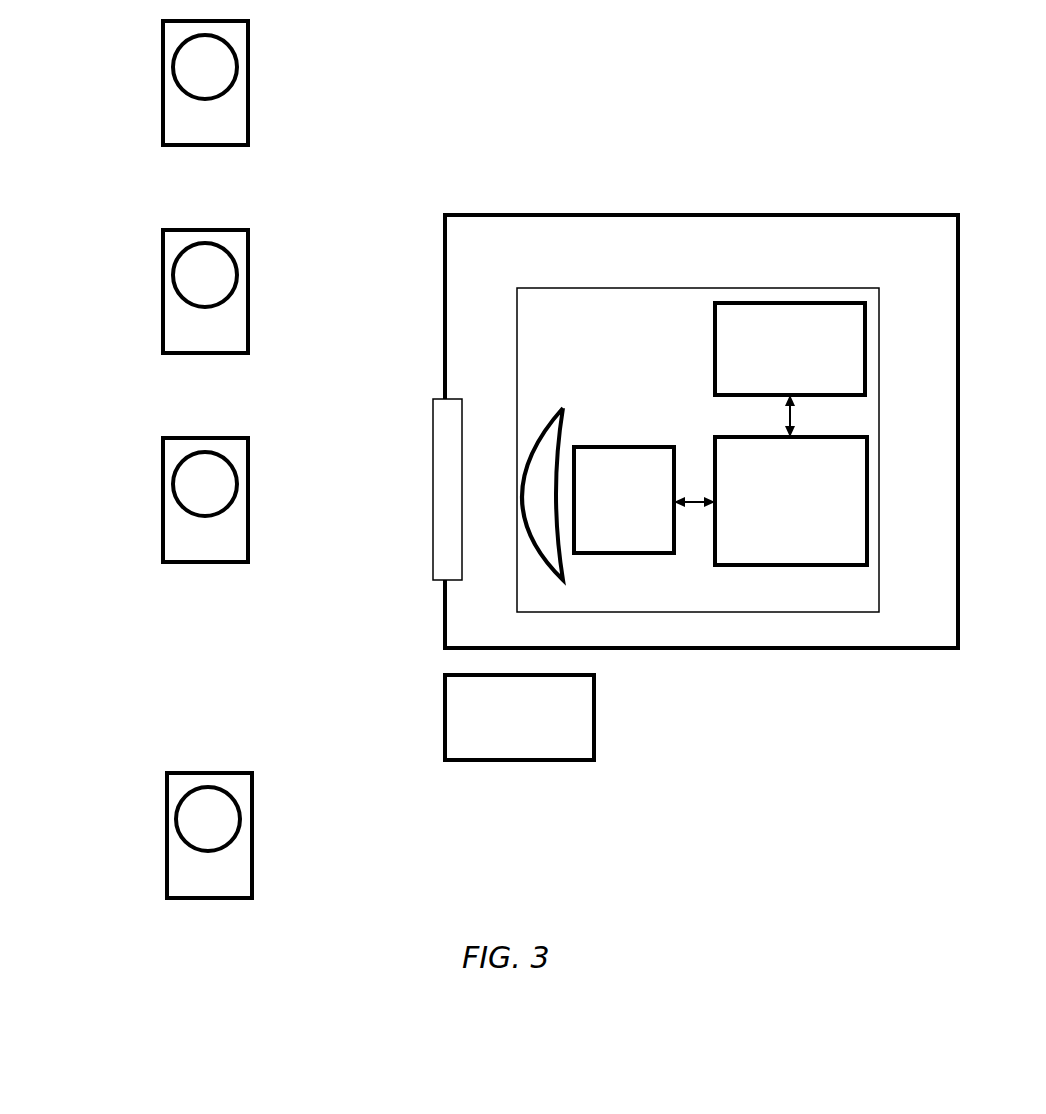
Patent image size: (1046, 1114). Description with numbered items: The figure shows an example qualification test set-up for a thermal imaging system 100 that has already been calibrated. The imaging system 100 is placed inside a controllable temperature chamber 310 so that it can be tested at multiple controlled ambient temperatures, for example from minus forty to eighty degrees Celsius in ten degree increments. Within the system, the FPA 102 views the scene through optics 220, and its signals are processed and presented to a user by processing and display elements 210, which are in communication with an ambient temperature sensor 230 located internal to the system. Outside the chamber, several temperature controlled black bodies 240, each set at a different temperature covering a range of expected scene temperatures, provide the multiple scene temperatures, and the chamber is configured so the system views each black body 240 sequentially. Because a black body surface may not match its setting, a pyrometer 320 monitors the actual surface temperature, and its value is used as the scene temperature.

The black bodies 240 is at (162, 795).
The temperature chamber 310 is at (935, 264).
The thermal imaging system 100 is at (652, 384).
The optics 220 is at (563, 580).
The FPA 102 is at (643, 494).
The ambient temperature sensor 230 is at (772, 335).
The processing and display elements 210 is at (771, 482).
The pyrometer 320 is at (503, 707).